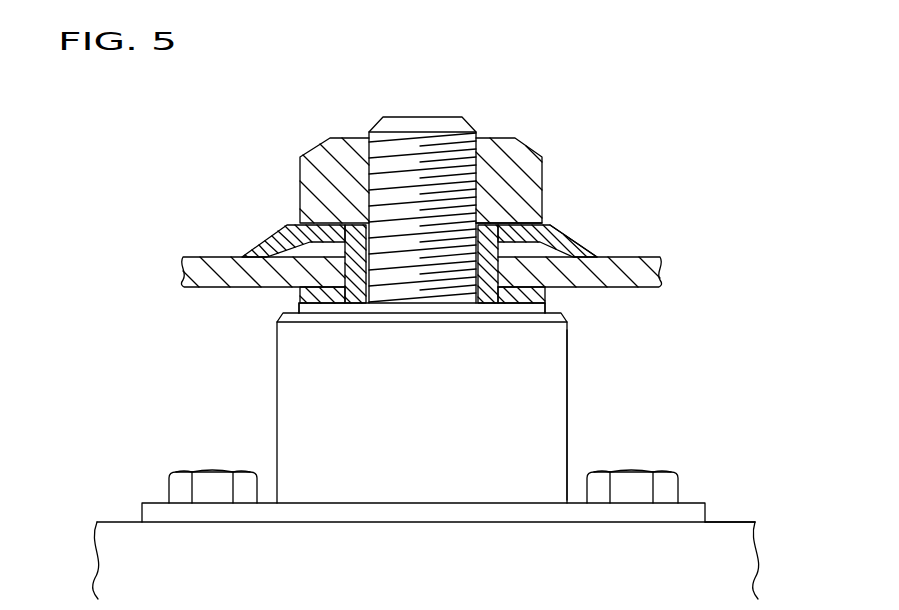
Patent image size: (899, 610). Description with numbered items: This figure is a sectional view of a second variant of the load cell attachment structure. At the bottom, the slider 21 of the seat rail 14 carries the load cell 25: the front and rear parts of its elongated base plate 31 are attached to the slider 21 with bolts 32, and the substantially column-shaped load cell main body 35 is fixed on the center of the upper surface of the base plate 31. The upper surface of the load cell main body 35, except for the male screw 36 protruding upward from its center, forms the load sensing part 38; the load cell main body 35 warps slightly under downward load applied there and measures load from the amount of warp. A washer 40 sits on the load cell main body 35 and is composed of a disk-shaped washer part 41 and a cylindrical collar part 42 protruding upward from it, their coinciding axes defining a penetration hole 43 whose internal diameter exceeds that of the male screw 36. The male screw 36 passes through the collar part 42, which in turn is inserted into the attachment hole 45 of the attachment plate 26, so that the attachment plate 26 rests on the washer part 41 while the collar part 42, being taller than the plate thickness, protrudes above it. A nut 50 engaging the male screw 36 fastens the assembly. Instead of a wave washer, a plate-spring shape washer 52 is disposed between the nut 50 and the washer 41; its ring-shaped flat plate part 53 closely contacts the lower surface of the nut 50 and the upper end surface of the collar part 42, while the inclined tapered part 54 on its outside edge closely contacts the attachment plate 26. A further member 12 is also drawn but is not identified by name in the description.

The first bus bar 12 is at (200, 246).
The seat rail 14 is at (776, 542).
The slider 21 is at (113, 563).
The load cell 25 is at (575, 436).
The attachment plate 26 is at (638, 262).
The base plate 31 is at (150, 507).
The bolt 32 is at (203, 480).
The load cell main body 35 is at (288, 406).
The male screw 36 is at (478, 163).
The load sensing part 38 is at (300, 295).
The washer 40 is at (558, 297).
The washer part 41 is at (512, 300).
The collar part 42 is at (559, 247).
The penetration hole 43 is at (377, 305).
The attachment hole 45 is at (345, 273).
The nut 50 is at (318, 138).
The plate-spring shape washer 52 is at (559, 216).
The flat plate part 53 is at (517, 216).
The tapered part 54 is at (502, 265).